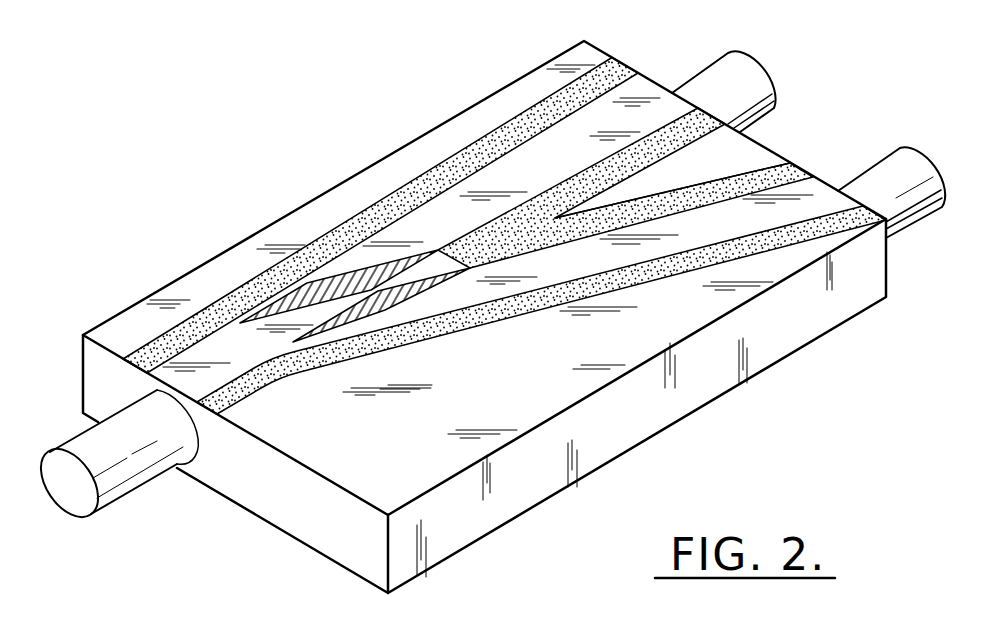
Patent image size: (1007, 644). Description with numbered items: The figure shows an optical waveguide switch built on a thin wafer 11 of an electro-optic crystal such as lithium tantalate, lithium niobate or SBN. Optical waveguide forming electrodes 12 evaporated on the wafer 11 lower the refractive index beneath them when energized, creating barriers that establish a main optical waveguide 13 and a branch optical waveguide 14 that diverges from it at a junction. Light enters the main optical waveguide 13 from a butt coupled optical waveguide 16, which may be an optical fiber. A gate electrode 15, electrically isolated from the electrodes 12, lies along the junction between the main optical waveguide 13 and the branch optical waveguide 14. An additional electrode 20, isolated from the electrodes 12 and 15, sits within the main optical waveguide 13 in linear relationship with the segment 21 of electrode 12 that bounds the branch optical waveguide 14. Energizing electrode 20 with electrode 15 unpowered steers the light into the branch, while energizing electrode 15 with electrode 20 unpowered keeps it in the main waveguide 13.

The thin wafer 11 is at (152, 298).
The optical waveguide forming electrodes 12 is at (628, 67).
The main optical waveguide 13 is at (520, 164).
The branch optical waveguide 14 is at (812, 191).
The gate electrode 15 is at (430, 296).
The butt coupled optical waveguide 16 is at (173, 415).
The electrode 20 is at (330, 283).
The segment of electrode 21 is at (789, 163).